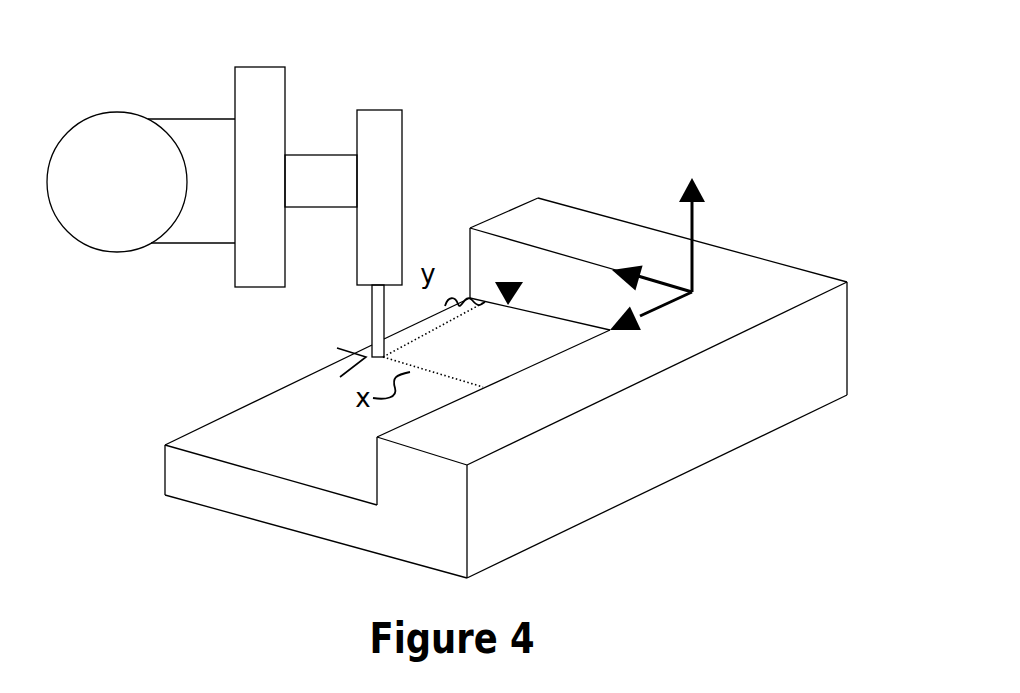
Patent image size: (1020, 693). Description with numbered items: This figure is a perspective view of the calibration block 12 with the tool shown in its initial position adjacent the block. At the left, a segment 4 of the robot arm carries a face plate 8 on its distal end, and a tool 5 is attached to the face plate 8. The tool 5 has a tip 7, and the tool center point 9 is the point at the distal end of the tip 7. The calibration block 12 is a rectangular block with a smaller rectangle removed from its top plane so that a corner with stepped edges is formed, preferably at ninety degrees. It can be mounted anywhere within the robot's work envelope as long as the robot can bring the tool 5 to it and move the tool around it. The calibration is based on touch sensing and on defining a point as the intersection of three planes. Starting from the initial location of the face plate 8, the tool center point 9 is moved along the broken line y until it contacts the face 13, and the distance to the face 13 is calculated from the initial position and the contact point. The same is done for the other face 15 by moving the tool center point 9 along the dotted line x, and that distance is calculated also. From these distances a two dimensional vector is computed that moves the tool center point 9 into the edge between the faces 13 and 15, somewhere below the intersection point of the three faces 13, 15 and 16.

The segment 4 is at (217, 132).
The tool 5 is at (387, 135).
The tip 7 is at (383, 332).
The face plate 8 is at (272, 80).
The tool center point 9 is at (365, 358).
The calibration block 12 is at (608, 492).
The face 13 is at (555, 265).
The face 15 is at (377, 462).
The face 16 is at (800, 287).